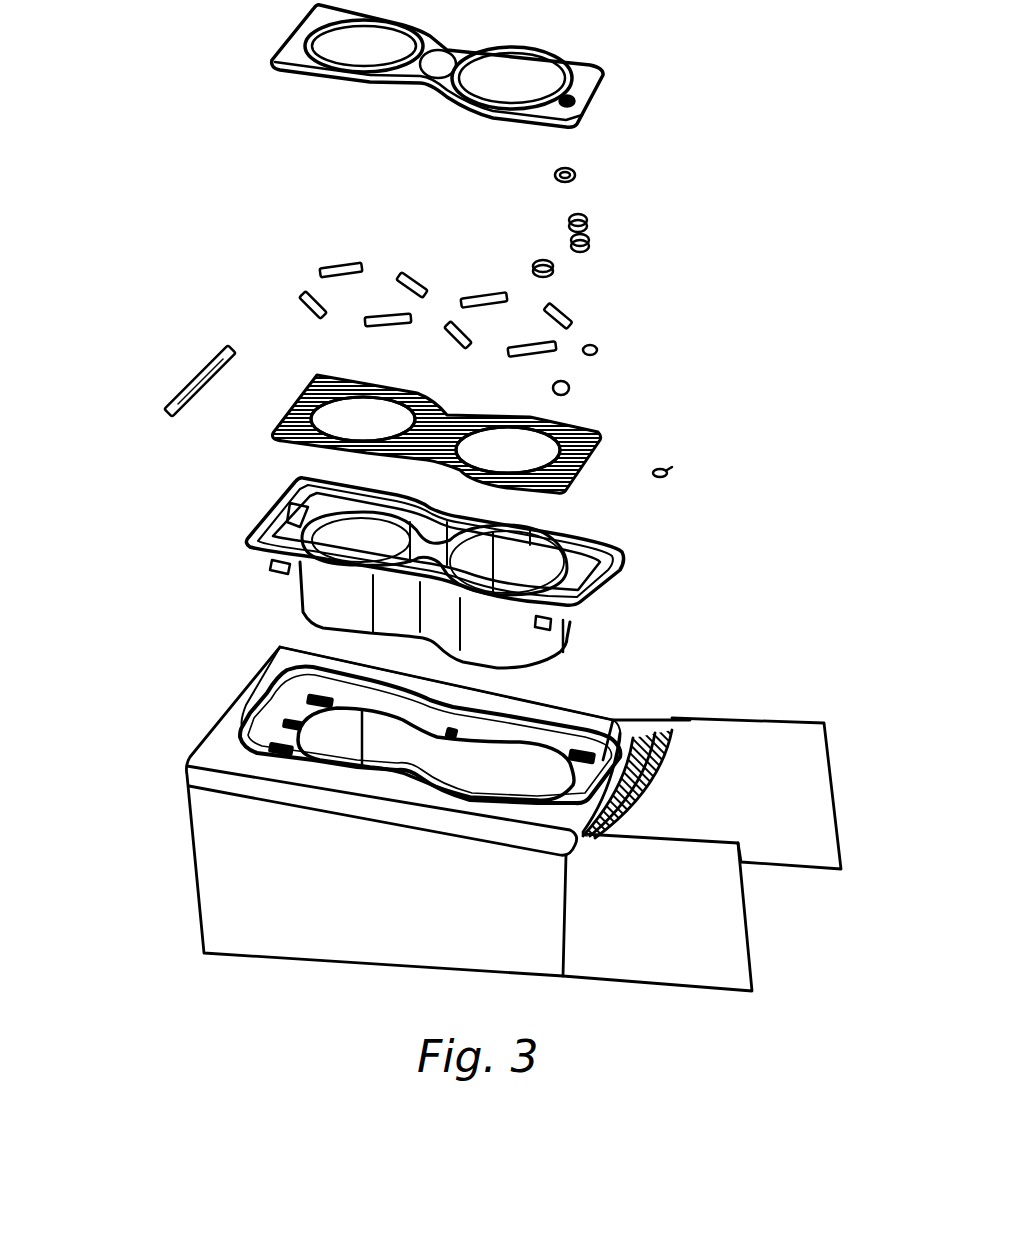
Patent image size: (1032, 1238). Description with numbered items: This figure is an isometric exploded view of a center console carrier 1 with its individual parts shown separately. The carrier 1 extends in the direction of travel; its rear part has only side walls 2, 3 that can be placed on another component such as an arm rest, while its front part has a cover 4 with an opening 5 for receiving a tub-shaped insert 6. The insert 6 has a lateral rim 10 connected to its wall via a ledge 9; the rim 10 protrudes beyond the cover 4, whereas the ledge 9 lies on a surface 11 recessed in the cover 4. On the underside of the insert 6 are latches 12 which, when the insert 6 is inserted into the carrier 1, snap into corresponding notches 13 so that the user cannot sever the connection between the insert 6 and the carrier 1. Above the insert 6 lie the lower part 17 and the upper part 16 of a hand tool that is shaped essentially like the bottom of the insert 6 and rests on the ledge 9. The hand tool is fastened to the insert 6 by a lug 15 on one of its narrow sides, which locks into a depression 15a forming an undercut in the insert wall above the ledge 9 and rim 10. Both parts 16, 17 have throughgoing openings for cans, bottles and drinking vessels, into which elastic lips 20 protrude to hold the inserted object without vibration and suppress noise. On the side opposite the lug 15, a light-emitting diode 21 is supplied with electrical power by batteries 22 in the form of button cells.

The carrier 1 is at (452, 814).
The side wall 2 is at (731, 905).
The side wall 3 is at (773, 743).
The cover 4 is at (444, 806).
The opening 5 is at (532, 762).
The tub-shaped insert 6 is at (560, 653).
The ledge 9 is at (575, 567).
The lateral rim 10 is at (600, 578).
The recessed surface 11 is at (316, 683).
The latch 12 is at (280, 570).
The notch 13 is at (627, 720).
The lug 15 is at (223, 350).
The depression 15a is at (292, 512).
The upper part 16 is at (582, 77).
The lower part 17 is at (587, 425).
The lip 20 is at (355, 262).
The light-emitting diode 21 is at (672, 470).
The battery 22 is at (569, 386).